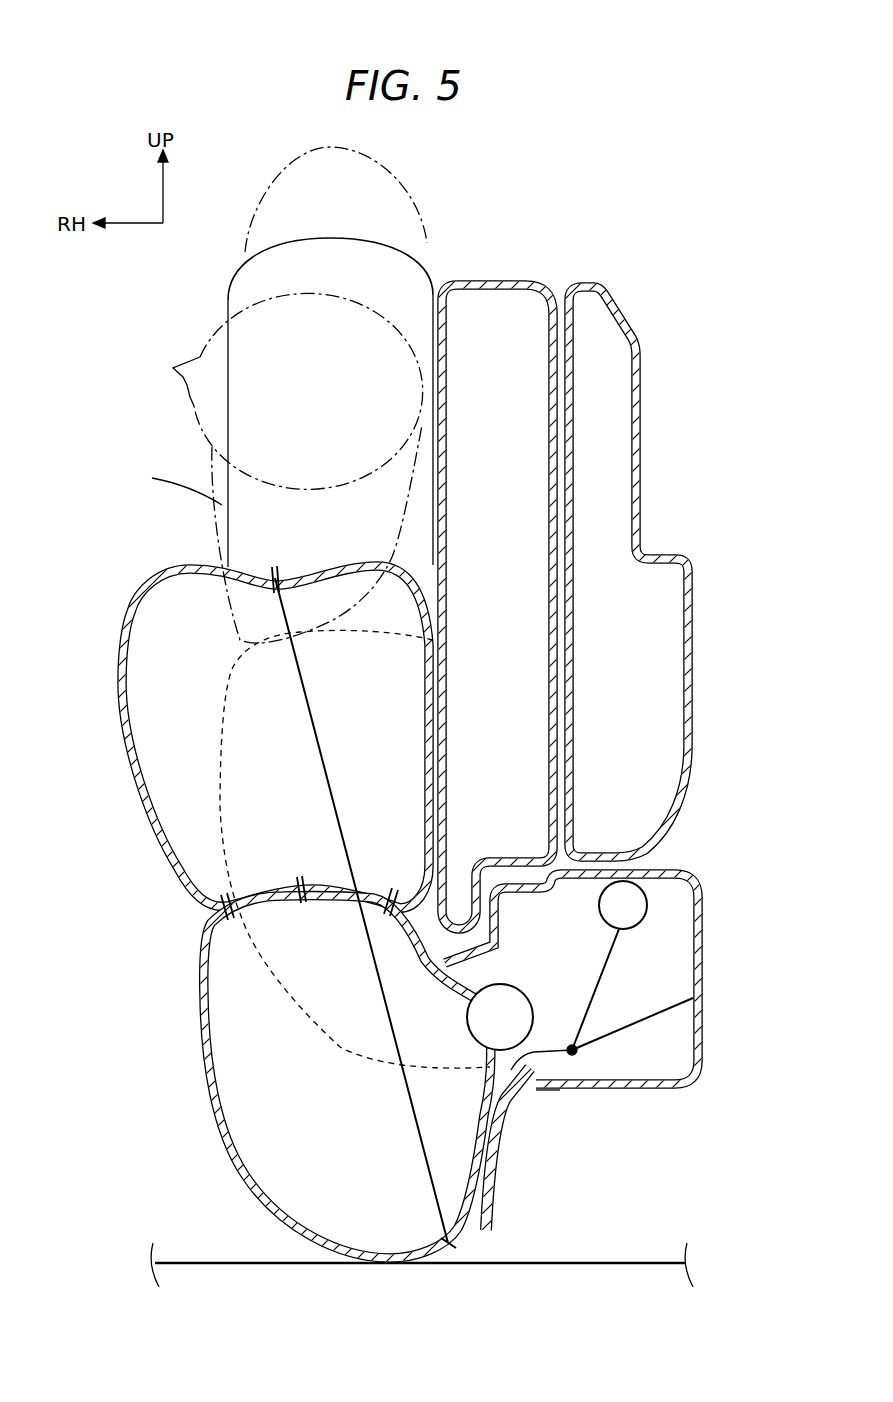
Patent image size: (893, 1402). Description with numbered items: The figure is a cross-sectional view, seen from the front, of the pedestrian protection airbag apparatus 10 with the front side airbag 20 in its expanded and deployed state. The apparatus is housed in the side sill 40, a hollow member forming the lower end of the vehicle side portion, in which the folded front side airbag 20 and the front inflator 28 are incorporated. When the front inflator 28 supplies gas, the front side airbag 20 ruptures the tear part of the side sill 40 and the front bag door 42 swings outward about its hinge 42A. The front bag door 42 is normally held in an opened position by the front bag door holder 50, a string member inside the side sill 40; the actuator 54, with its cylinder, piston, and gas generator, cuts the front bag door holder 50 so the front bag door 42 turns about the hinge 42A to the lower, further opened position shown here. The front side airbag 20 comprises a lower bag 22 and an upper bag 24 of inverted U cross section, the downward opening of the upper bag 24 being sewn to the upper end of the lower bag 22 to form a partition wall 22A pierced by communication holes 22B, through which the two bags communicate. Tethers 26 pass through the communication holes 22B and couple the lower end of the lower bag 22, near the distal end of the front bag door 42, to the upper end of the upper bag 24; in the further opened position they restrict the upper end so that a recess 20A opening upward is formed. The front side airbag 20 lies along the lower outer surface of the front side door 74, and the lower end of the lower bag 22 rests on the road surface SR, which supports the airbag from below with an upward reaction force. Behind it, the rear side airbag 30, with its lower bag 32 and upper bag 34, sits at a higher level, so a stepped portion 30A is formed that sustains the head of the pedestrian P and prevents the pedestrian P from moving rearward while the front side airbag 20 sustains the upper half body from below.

The pedestrian protection airbag apparatus 10 is at (449, 197).
The front side door 74 is at (509, 277).
The rear side airbag 30 is at (229, 292).
The stepped portion 30A is at (352, 272).
The pedestrian P is at (187, 396).
The upper bag 34 is at (175, 482).
The front side airbag 20 is at (267, 878).
The recess 20A is at (278, 574).
The upper bag 24 is at (118, 740).
The tethers 26 is at (322, 800).
The lower bag 32 is at (222, 808).
The lower bag 22 is at (200, 1070).
The partition wall 22A is at (278, 900).
The communication holes 22B is at (325, 895).
The front inflator 28 is at (500, 984).
The actuator 54 is at (648, 905).
The front bag door holder 50 is at (640, 1025).
The side sill 40 is at (643, 1092).
The hinge 42A is at (537, 1092).
The front bag door 42 is at (485, 1200).
The road surface SR is at (533, 1266).